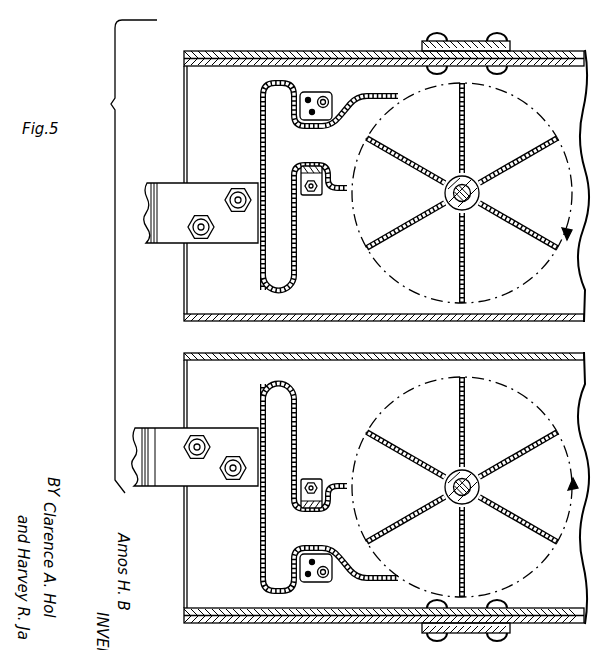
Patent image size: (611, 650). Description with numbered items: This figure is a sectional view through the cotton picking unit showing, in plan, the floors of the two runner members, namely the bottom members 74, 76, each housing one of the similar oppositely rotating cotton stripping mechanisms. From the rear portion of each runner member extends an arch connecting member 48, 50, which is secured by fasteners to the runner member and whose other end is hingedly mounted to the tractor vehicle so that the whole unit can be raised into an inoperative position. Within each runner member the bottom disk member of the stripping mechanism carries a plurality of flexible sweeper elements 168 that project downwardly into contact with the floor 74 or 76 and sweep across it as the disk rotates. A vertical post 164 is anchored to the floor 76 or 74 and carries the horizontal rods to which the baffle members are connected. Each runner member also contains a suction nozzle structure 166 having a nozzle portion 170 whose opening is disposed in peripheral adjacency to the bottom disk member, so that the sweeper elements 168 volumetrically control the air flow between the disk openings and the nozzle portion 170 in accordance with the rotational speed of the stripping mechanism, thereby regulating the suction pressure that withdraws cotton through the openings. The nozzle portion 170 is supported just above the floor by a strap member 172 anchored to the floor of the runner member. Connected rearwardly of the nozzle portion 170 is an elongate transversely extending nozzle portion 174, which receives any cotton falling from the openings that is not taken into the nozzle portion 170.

The bottom member 76 is at (207, 106).
The arch connecting member 50 is at (157, 182).
The suction nozzle structure 166 is at (262, 80).
The vertical post 164 is at (323, 99).
The nozzle portion 170 is at (370, 93).
The strap member 172 is at (311, 167).
The flexible sweeper element 168 is at (372, 240).
The elongate transversely extending nozzle portion 174 is at (261, 260).
The bottom member 74 is at (195, 400).
The arch connecting member 48 is at (143, 486).